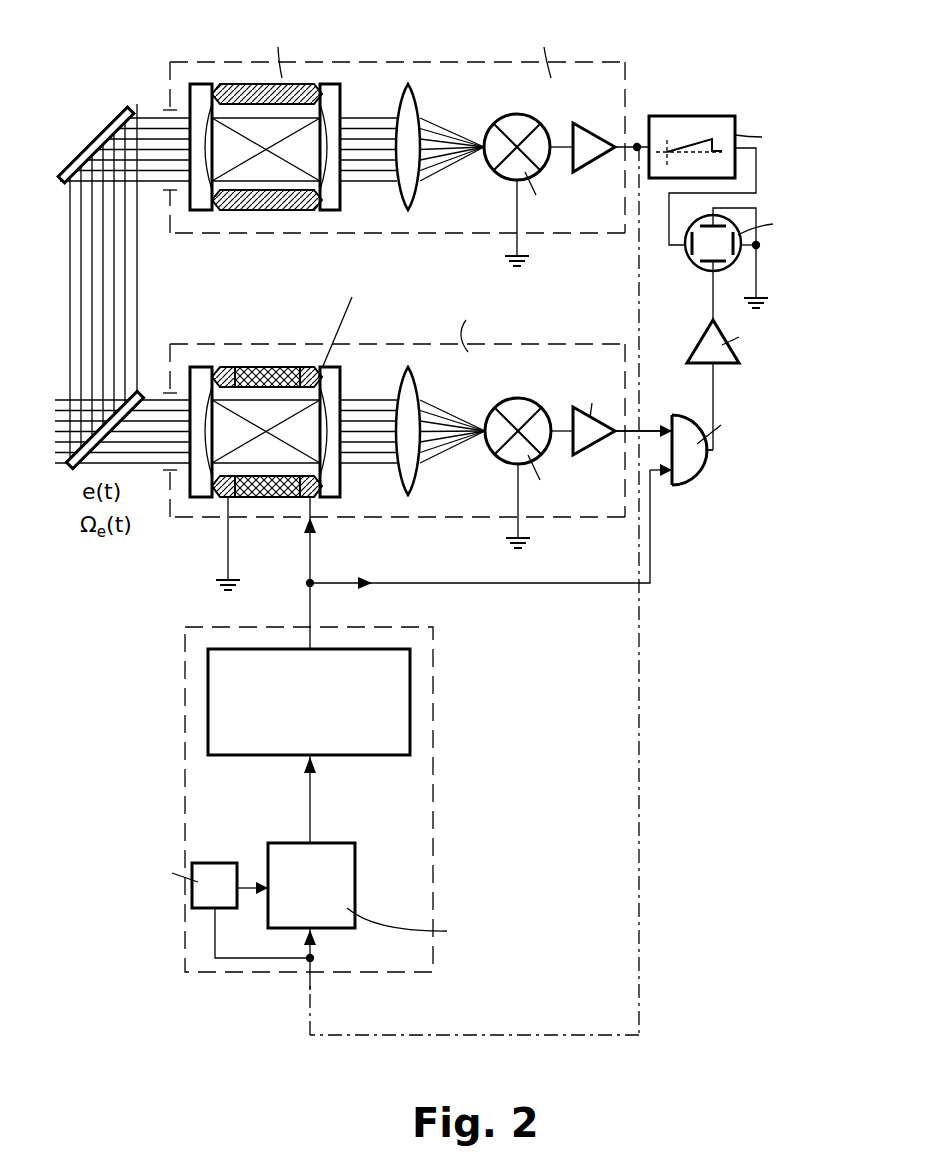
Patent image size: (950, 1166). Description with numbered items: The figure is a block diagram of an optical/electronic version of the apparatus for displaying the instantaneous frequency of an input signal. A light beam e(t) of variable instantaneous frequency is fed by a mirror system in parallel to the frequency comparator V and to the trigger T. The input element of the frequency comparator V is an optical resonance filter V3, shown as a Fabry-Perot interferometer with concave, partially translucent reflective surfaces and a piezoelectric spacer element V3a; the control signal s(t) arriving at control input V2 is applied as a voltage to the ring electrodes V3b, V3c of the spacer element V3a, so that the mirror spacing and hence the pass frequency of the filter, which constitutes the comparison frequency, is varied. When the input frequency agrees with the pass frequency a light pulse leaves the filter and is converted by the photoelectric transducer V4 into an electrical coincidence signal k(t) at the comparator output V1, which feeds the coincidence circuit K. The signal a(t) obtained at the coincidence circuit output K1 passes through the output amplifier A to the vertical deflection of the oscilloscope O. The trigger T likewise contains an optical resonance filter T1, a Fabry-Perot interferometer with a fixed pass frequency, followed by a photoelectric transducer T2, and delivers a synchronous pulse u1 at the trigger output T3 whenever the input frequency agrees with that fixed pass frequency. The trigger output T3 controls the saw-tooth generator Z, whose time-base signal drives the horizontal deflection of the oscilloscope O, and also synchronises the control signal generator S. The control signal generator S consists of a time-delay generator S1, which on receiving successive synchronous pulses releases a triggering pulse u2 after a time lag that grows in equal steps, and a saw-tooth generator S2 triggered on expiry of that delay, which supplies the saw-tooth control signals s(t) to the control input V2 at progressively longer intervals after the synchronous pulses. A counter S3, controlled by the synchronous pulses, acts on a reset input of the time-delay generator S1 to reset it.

The trigger T is at (628, 88).
The optical resonance filter T1 is at (343, 93).
The photoelectric transducer T2 is at (513, 113).
The trigger output T3 is at (646, 120).
The saw-tooth generator Z is at (739, 119).
The oscilloscope O is at (686, 268).
The output amplifier A is at (722, 365).
The coincidence circuit K is at (687, 483).
The coincidence circuit output K1 is at (716, 440).
The frequency comparator V is at (407, 520).
The comparator output V1 is at (644, 426).
The control input V2 is at (307, 559).
The optical resonance filter V3 is at (333, 376).
The piezoelectric spacer element V3a is at (262, 367).
The ring electrode V3b is at (222, 367).
The ring electrode V3c is at (304, 392).
The photoelectric transducer V4 is at (516, 396).
The control signal generator S is at (438, 823).
The time-delay generator S1 is at (360, 890).
The saw-tooth generator S2 is at (388, 758).
The counter S3 is at (206, 862).